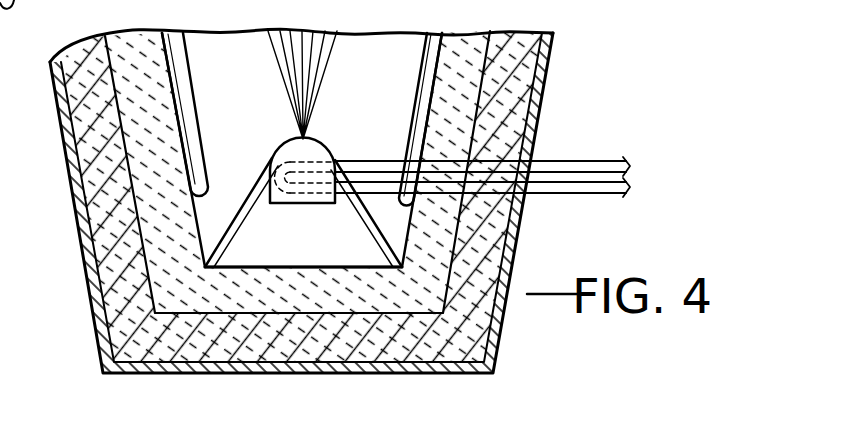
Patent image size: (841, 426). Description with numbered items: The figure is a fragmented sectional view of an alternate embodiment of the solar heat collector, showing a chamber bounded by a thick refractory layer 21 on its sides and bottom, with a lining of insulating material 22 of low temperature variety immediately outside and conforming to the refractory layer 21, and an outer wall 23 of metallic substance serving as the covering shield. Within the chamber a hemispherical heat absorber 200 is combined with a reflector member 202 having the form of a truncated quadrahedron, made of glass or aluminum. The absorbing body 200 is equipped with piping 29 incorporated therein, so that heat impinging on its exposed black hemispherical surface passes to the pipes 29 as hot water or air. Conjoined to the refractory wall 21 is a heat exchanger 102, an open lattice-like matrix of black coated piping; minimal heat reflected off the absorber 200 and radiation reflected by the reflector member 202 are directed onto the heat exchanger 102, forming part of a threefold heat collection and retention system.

The refractory layer 21 is at (457, 115).
The lining of insulating material 22 is at (528, 57).
The outer wall 23 is at (522, 212).
The piping 29 is at (357, 161).
The heat exchanger 102 is at (185, 48).
The hemispherical heat absorber 200 is at (284, 158).
The reflector member 202 is at (233, 222).